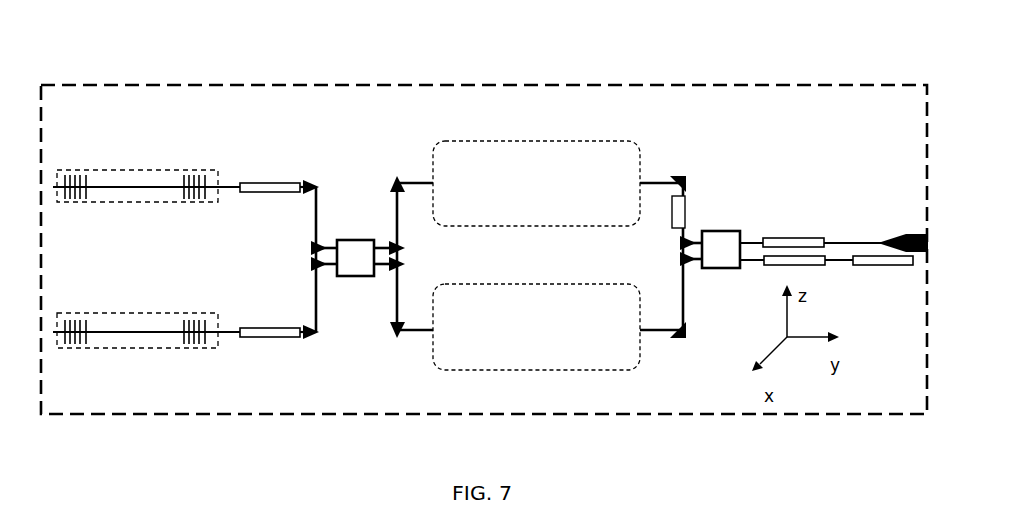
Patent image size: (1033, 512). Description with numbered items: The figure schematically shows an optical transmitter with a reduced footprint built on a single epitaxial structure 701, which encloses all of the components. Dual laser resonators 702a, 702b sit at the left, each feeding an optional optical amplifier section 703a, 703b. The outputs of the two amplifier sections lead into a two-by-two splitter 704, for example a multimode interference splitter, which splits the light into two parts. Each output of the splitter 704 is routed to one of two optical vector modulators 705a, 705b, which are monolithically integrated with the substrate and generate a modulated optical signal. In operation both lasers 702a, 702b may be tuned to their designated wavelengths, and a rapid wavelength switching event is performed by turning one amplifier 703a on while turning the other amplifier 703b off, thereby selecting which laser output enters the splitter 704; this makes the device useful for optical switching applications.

The single epitaxial structure 701 is at (126, 84).
The laser resonator 702a is at (107, 170).
The laser resonator 702b is at (107, 313).
The optical amplifier section 703a is at (262, 183).
The optical amplifier section 703b is at (262, 328).
The 2x2 splitter 704 is at (357, 240).
The optical vector modulator 705a is at (452, 142).
The optical vector modulator 705b is at (432, 357).